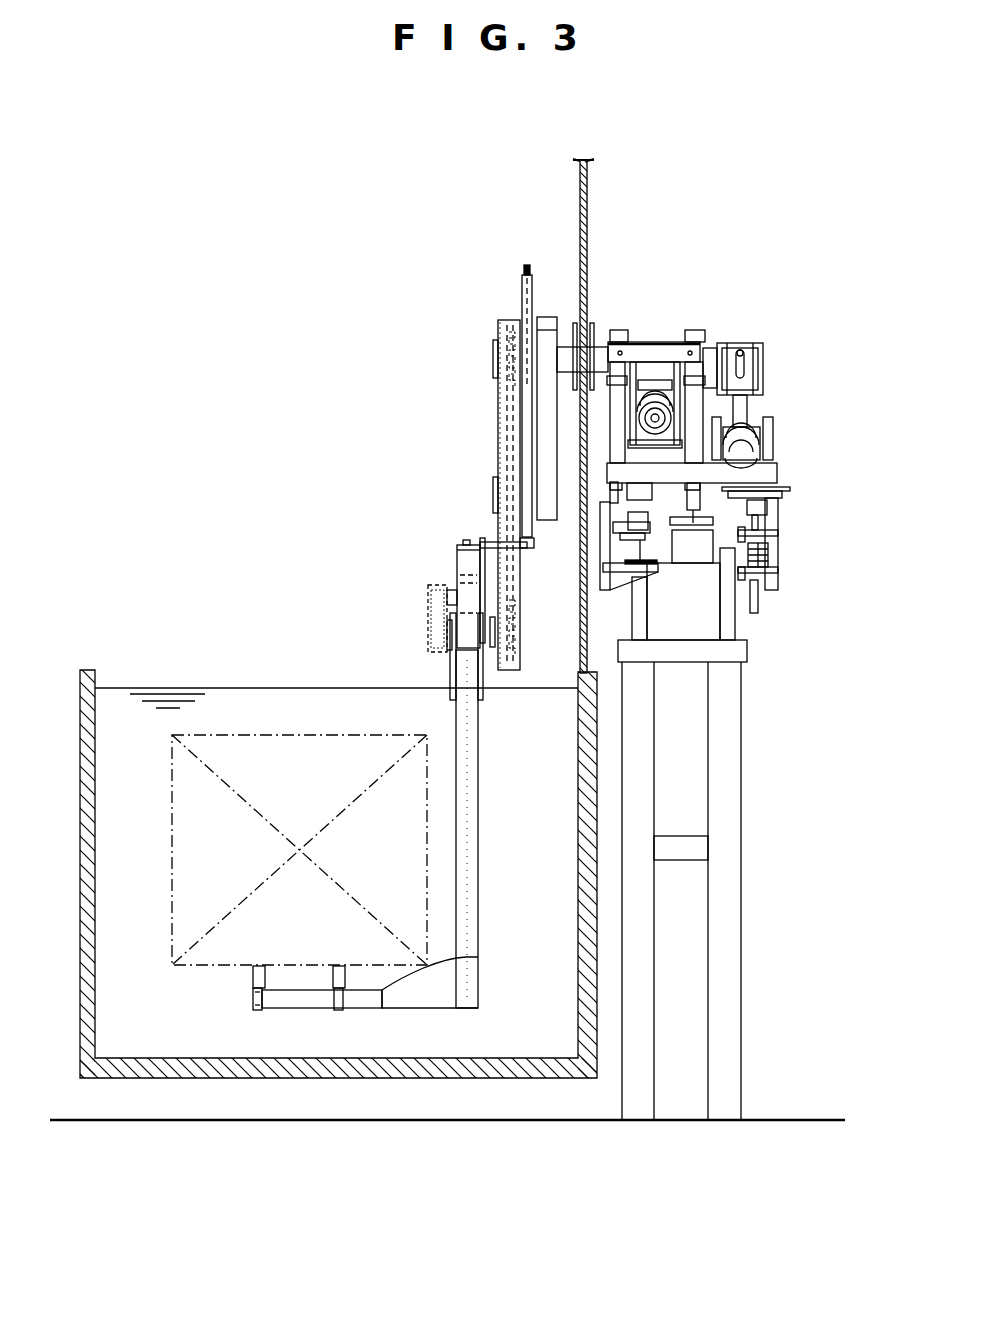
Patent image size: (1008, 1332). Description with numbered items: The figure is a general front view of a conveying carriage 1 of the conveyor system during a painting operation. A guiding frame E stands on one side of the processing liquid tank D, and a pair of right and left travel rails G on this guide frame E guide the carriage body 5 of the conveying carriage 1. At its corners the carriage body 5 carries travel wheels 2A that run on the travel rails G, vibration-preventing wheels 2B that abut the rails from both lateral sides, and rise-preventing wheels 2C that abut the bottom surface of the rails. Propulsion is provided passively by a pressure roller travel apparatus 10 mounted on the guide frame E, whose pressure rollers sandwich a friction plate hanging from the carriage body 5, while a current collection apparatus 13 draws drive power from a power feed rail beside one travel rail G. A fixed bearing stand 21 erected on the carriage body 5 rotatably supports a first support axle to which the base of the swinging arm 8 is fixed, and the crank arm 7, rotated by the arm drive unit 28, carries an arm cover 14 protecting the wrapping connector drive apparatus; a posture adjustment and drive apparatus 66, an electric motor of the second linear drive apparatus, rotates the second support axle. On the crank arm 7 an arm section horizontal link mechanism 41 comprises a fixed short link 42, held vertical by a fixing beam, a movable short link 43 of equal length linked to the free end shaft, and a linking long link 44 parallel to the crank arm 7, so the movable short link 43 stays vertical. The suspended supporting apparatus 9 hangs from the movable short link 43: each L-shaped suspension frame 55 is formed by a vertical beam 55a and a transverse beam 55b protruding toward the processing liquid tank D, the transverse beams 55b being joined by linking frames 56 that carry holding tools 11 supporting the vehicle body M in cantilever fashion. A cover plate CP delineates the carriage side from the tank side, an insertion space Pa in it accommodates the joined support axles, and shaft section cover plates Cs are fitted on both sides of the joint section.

The conveying carriage 1 is at (630, 416).
The carriage body 5 is at (791, 466).
The crank arm 7 is at (498, 447).
The swinging arm 8 is at (545, 521).
The suspended supporting apparatus 9 is at (417, 608).
The pressure roller travel apparatus 10 is at (691, 567).
The holding tool 11 is at (253, 975).
The current collection apparatus 13 is at (742, 553).
The arm cover 14 is at (457, 495).
The fixed bearing stand 21 is at (697, 328).
The arm drive unit 28 is at (774, 326).
The arm section horizontal link mechanism 41 is at (478, 406).
The fixed short link 42 is at (520, 320).
The movable short link 43 is at (474, 565).
The linking long link 44 is at (528, 422).
The suspension frame 55 is at (372, 857).
The vertical beam 55a is at (467, 846).
The transverse beam 55b is at (318, 1000).
The linking frame 56 is at (258, 1011).
The posture adjustment and drive apparatus 66 is at (661, 321).
The travel wheel 2A is at (767, 522).
The vibration-preventing wheel 2B is at (767, 568).
The rise-preventing wheel 2C is at (755, 615).
The cover plate CP is at (589, 193).
The shaft section cover plate Cs is at (575, 330).
The insertion space Pa is at (597, 340).
The travel rail G is at (640, 548).
The vehicle body M is at (298, 735).
The processing liquid tank D is at (316, 1083).
The guiding frame E is at (768, 748).